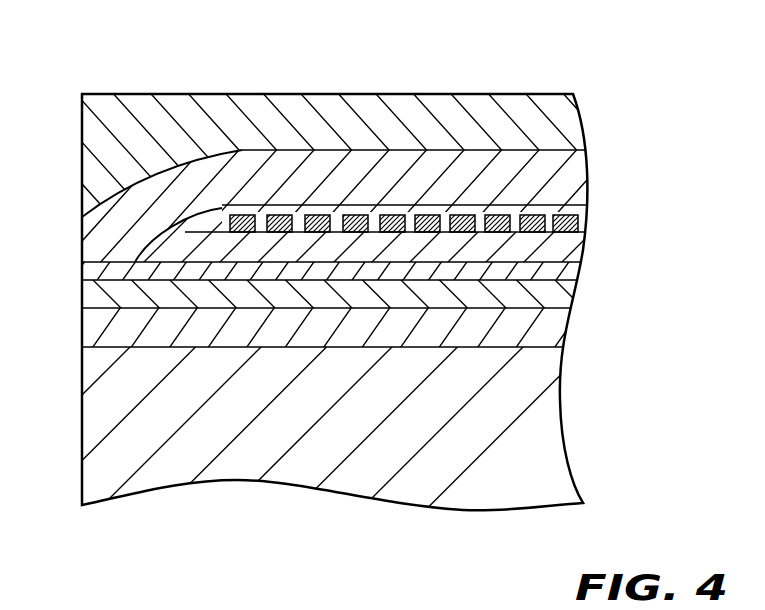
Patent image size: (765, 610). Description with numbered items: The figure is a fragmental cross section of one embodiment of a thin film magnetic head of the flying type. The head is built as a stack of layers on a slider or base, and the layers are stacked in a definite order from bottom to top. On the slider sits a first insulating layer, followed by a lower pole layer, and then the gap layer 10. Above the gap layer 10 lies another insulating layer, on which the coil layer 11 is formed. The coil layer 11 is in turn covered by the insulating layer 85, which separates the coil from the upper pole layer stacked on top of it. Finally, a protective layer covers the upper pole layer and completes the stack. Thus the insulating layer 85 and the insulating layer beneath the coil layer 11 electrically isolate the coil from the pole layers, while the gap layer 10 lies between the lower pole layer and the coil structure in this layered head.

The gap layer 10 is at (100, 262).
The coil layer 11 is at (245, 213).
The insulating layer 85 is at (587, 210).